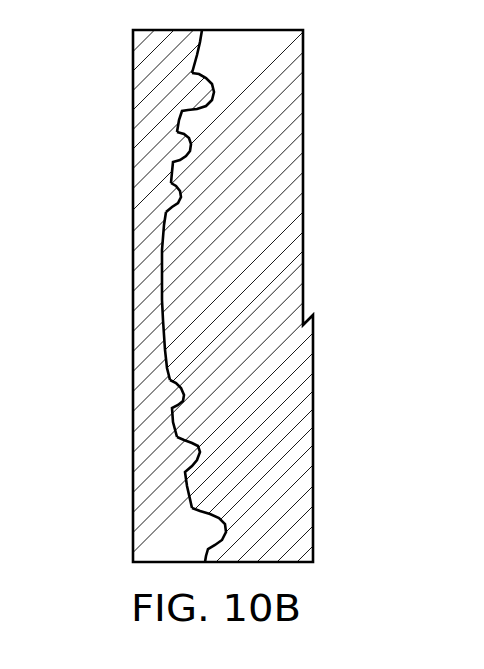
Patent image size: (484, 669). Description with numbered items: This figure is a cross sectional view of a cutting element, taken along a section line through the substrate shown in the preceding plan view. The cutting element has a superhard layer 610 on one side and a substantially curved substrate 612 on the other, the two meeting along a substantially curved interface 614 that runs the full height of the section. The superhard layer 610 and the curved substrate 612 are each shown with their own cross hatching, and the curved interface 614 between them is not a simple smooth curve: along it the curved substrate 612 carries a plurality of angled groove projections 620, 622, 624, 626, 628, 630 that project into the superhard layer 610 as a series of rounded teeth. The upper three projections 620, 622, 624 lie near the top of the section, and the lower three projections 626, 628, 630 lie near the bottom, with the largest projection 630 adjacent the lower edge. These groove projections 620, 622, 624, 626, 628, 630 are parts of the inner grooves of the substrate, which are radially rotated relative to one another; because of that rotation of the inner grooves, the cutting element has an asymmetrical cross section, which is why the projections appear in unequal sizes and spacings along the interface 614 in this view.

The superhard layer 610 is at (150, 95).
The curved substrate 612 is at (289, 93).
The curved interface 614 is at (165, 353).
The angled groove projection 620 is at (213, 83).
The angled groove projection 622 is at (195, 141).
The angled groove projection 624 is at (187, 198).
The angled groove projection 626 is at (186, 383).
The angled groove projection 628 is at (207, 444).
The angled groove projection 630 is at (217, 508).